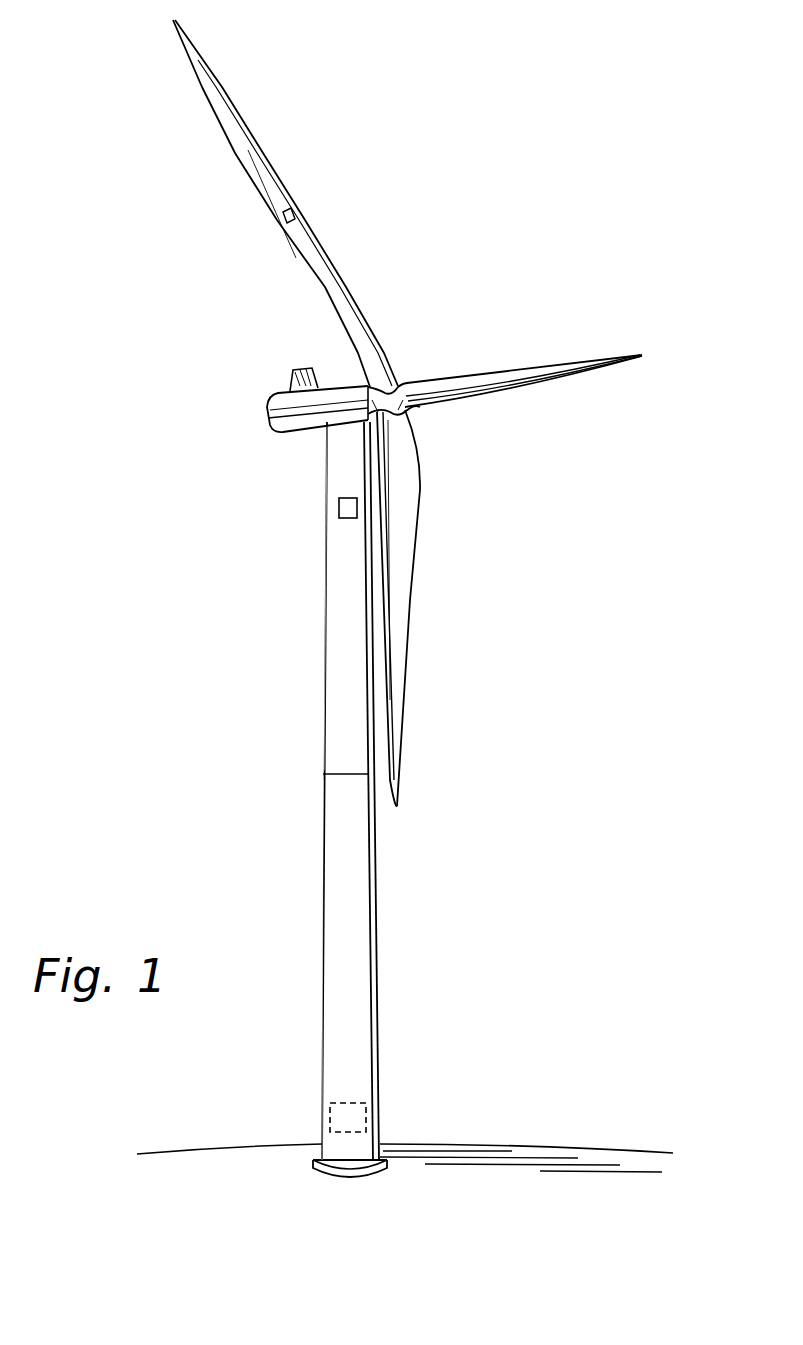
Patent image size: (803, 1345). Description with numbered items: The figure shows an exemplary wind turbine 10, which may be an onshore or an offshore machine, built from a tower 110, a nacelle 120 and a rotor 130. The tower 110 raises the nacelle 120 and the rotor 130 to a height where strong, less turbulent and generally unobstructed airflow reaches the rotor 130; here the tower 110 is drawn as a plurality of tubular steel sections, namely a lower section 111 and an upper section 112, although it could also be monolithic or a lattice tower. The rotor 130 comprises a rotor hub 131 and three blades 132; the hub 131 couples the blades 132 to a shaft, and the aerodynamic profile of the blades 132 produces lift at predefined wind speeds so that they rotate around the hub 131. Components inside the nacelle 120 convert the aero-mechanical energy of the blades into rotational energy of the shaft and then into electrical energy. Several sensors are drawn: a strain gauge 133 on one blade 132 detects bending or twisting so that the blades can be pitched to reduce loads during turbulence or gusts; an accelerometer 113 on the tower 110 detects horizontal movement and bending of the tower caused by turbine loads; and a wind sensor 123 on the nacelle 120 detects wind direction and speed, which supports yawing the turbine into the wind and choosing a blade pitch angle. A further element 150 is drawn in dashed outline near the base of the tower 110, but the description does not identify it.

The wind turbine 10 is at (551, 185).
The tower 110 is at (307, 701).
The tubular steel section 111 is at (342, 895).
The tubular steel section 112 is at (347, 594).
The accelerometer 113 is at (339, 508).
The nacelle 120 is at (270, 407).
The wind sensor 123 is at (267, 364).
The rotor 130 is at (389, 413).
The rotor hub 131 is at (407, 385).
The blade 132 is at (389, 413).
The strain gauge 133 is at (285, 221).
The controller 150 is at (340, 1109).